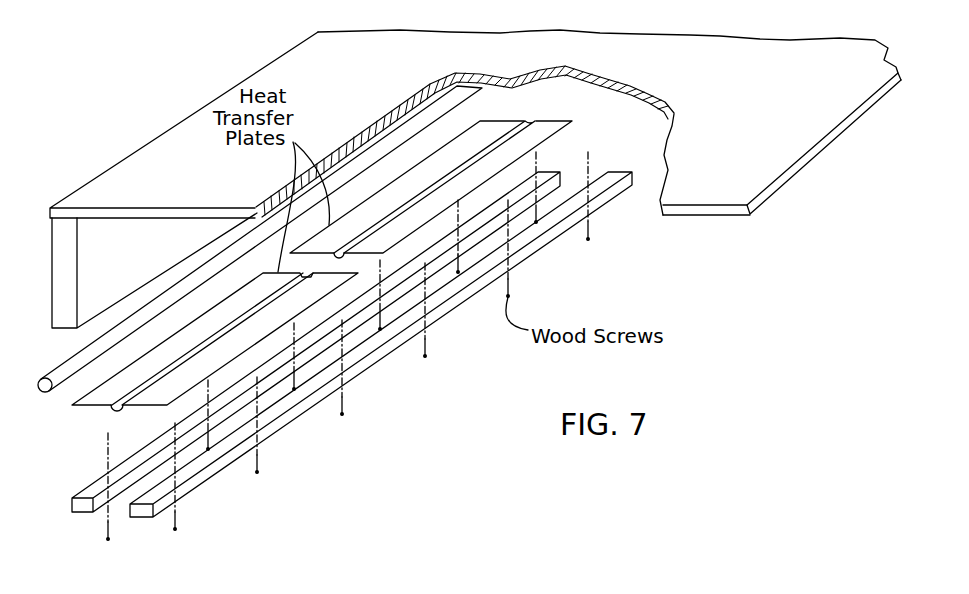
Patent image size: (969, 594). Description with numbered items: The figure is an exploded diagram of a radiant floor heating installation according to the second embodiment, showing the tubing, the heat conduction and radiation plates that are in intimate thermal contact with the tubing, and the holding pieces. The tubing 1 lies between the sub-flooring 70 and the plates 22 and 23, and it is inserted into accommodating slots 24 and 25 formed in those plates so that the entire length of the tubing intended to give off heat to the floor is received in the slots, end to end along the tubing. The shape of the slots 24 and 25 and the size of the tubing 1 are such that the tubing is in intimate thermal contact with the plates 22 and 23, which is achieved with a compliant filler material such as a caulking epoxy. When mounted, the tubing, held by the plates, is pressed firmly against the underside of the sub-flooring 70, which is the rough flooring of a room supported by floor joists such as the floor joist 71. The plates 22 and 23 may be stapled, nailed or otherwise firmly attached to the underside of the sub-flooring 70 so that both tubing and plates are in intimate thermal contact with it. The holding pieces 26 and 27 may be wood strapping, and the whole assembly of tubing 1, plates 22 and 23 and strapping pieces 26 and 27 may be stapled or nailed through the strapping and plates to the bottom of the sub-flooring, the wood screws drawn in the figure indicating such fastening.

The tubing 1 is at (430, 108).
The plate 22 is at (195, 360).
The plate 23 is at (443, 174).
The slot 24 is at (113, 408).
The slot 25 is at (528, 122).
The holding piece 26 is at (82, 512).
The holding piece 27 is at (143, 517).
The sub-flooring 70 is at (785, 130).
The floor joist 71 is at (58, 267).